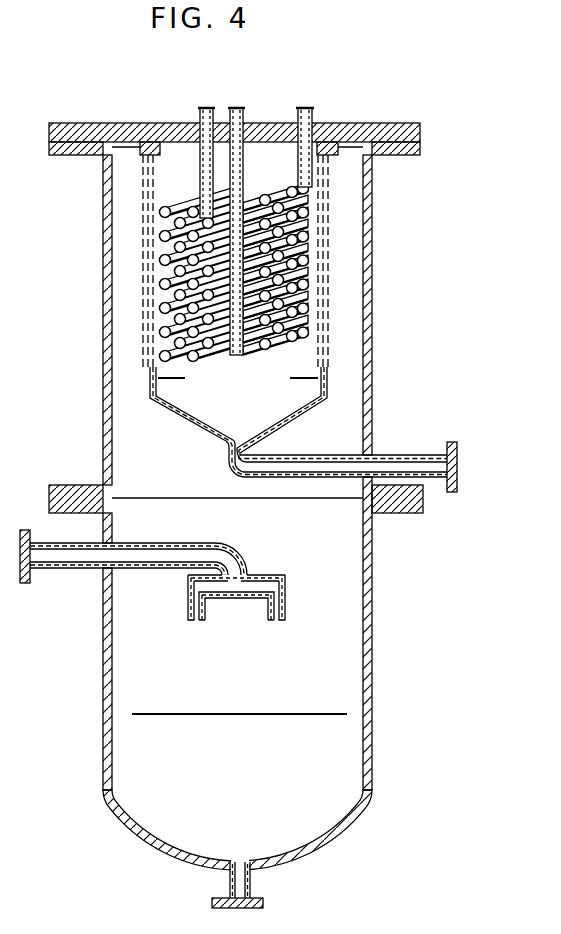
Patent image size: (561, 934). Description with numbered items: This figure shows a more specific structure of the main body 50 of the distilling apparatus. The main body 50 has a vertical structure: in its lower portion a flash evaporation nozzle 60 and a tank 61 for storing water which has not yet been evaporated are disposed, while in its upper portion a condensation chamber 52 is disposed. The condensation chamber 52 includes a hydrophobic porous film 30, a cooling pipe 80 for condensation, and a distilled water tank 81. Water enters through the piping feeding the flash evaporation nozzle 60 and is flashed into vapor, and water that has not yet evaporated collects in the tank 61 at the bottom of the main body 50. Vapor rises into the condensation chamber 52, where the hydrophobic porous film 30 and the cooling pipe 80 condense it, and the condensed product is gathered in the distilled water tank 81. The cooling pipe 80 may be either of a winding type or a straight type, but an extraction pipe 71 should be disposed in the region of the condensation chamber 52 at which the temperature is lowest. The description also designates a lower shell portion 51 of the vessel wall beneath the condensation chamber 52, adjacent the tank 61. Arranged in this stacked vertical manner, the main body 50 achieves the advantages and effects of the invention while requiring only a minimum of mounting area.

The extraction pipe 71 is at (243, 160).
The condensation chamber 52 is at (170, 182).
The hydrophobic porous film 30 is at (150, 244).
The cooling pipe 80 is at (163, 330).
The distilled water tank 81 is at (167, 393).
The main body 50 is at (352, 367).
The lower shell section 51 is at (115, 657).
The flash evaporation nozzle 60 is at (290, 600).
The tank 61 is at (132, 763).